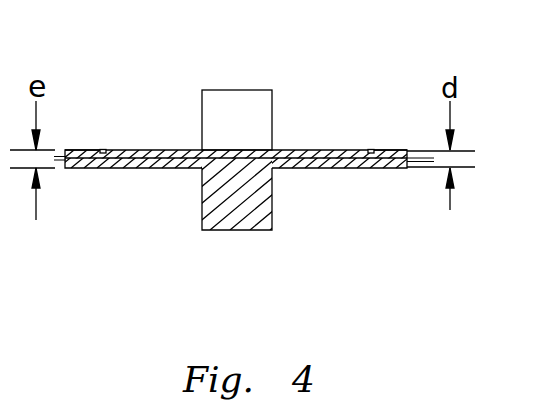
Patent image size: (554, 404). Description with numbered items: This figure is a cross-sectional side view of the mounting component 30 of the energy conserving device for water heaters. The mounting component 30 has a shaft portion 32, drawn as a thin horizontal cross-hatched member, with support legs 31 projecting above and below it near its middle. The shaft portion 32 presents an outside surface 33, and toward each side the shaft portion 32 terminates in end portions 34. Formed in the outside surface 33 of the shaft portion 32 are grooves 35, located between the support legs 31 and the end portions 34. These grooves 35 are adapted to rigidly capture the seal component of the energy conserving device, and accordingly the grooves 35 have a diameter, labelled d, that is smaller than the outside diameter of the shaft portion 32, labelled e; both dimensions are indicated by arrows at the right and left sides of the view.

The mounting component 30 is at (296, 79).
The support legs 31 is at (236, 90).
The shaft portion 32 is at (131, 149).
The outside surface 33 is at (143, 170).
The end portions 34 is at (80, 149).
The grooves 35 is at (102, 149).